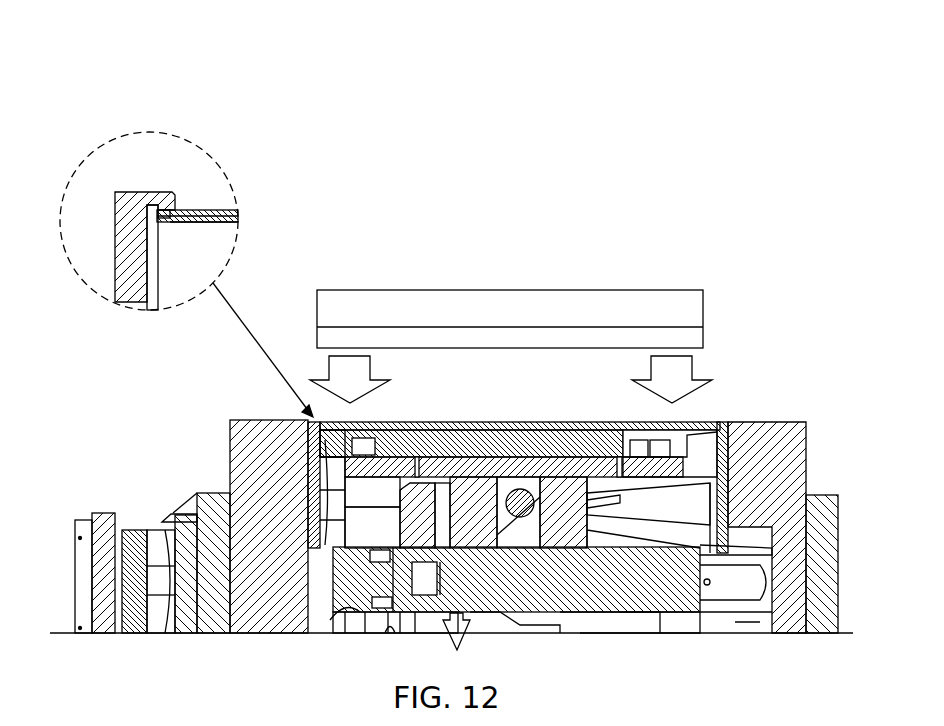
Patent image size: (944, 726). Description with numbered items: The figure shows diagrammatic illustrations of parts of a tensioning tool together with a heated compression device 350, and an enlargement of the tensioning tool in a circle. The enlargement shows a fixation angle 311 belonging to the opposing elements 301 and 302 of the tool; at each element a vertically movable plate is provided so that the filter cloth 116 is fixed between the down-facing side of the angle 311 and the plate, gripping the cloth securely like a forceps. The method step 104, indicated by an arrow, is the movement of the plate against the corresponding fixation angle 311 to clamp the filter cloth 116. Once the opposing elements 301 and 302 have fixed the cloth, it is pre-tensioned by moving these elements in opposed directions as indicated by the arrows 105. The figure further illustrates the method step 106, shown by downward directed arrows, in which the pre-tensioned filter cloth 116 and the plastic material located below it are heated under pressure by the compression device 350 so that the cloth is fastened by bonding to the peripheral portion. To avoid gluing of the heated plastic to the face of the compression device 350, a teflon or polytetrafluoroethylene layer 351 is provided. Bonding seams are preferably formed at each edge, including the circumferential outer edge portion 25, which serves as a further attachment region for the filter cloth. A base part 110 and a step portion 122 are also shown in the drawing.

The method step of moving the plate 104 is at (128, 240).
The fixation angle 311 is at (160, 195).
The filter cloth 116 is at (565, 420).
The circumferential outer edge portion 25 is at (175, 223).
The step portion 122 is at (232, 224).
The element 301 is at (252, 424).
The arrows indicating opposed movement 105 is at (255, 448).
The compression device 350 is at (617, 285).
The PTFE layer 351 is at (705, 336).
The method step of heating under pressure 106 is at (690, 370).
The base member 110 is at (482, 420).
The element 302 is at (773, 440).